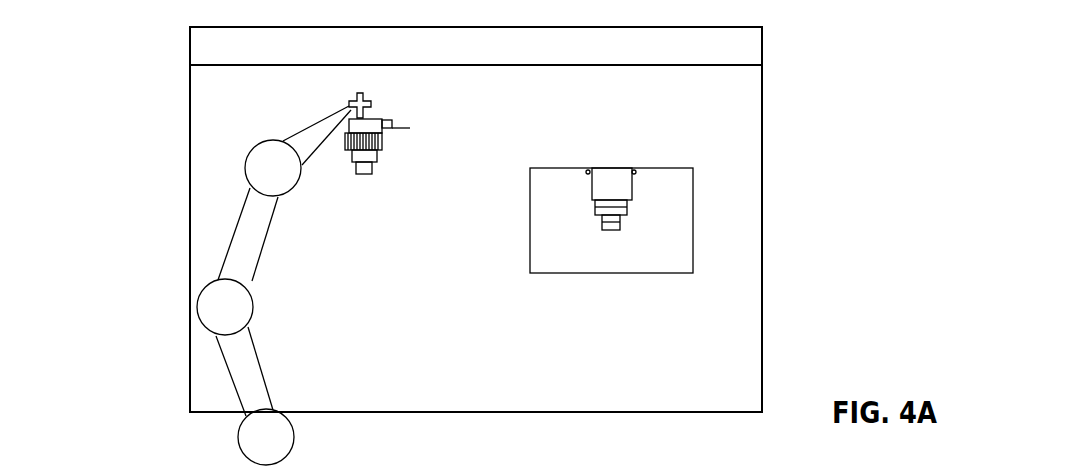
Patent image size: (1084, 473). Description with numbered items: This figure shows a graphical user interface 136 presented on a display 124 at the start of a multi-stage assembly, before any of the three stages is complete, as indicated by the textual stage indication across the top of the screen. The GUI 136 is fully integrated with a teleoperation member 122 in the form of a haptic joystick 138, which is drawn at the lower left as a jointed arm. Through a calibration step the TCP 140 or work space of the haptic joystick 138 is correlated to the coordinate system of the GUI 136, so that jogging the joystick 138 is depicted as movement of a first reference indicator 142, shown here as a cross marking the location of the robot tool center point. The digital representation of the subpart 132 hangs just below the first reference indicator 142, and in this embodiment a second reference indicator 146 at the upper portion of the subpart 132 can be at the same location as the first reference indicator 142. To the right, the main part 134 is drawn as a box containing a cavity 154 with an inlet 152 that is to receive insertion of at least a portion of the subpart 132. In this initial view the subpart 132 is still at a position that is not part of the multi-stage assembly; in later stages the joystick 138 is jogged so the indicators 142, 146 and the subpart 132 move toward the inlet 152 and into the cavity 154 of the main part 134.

The teleoperation member 122 is at (230, 288).
The display 124 is at (762, 362).
The subpart 132 is at (363, 175).
The main part 134 is at (610, 263).
The graphical user interface 136 is at (735, 119).
The haptic joystick 138 is at (258, 436).
The TCP 140 is at (213, 99).
The first reference indicator 142 is at (352, 100).
The second reference indicator 146 is at (372, 105).
The inlet 152 is at (610, 166).
The cavity 154 is at (610, 188).